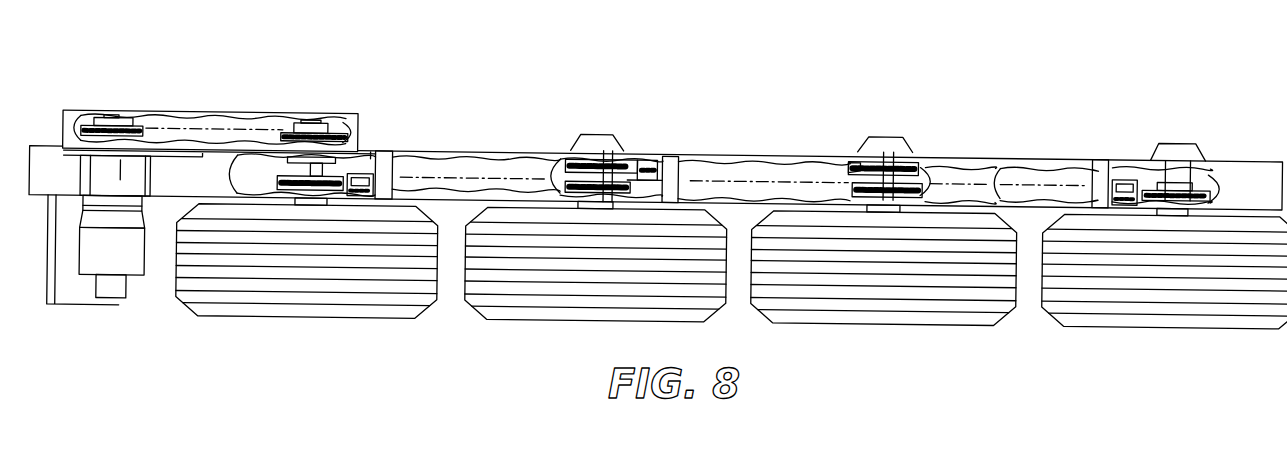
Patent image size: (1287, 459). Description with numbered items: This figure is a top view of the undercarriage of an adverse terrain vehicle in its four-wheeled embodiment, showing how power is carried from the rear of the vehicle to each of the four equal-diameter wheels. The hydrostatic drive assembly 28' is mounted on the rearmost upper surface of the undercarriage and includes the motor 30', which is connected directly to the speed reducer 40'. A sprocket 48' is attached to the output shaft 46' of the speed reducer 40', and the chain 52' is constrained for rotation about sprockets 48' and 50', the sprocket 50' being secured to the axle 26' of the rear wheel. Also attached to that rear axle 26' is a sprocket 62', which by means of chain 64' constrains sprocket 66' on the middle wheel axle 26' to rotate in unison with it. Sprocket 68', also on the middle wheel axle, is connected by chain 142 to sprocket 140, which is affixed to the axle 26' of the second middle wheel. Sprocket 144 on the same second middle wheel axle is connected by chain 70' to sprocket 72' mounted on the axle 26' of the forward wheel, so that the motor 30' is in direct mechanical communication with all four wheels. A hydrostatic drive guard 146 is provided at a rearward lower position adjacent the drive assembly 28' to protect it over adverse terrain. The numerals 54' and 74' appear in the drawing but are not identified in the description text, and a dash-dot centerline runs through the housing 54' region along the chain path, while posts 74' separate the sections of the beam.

The hydrostatic drive assembly 28' is at (656, 123).
The housing 54' is at (211, 106).
The chain 52' is at (213, 107).
The sprocket 48' is at (112, 99).
The output shaft 46' is at (135, 95).
The sprocket 50' is at (348, 118).
The sprocket 62' is at (316, 161).
The support post 74' is at (742, 160).
The axle 26' is at (720, 143).
The chain 64' is at (476, 158).
The sprocket 66' is at (595, 161).
The sprocket 68' is at (656, 150).
The chain 142 is at (739, 162).
The sprocket 140 is at (858, 148).
The sprocket 144 is at (924, 177).
The chain 70' is at (1046, 162).
The sprocket 72' is at (1187, 162).
The speed reducer 40' is at (130, 194).
The motor 30' is at (121, 259).
The hydrostatic drive guard 146 is at (72, 297).